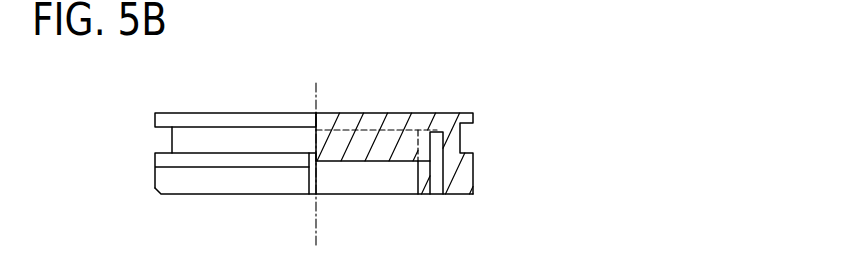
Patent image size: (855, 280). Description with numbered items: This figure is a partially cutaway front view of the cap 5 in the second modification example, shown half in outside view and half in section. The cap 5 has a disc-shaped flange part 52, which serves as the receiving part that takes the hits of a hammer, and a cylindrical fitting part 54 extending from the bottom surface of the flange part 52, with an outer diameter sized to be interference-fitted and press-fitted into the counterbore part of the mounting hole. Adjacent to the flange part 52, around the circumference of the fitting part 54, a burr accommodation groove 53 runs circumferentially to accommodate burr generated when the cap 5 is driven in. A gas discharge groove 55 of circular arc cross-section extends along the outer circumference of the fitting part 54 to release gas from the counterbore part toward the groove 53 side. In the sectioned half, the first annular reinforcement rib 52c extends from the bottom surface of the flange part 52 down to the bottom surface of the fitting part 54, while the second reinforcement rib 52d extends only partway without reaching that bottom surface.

The cap 5 is at (498, 117).
The flange part 52 is at (228, 112).
The first annular reinforcement rib 52c is at (428, 191).
The second reinforcement rib 52d is at (360, 154).
The burr accommodation groove 53 is at (179, 139).
The fitting part 54 is at (167, 163).
The gas discharge groove 55 is at (308, 183).